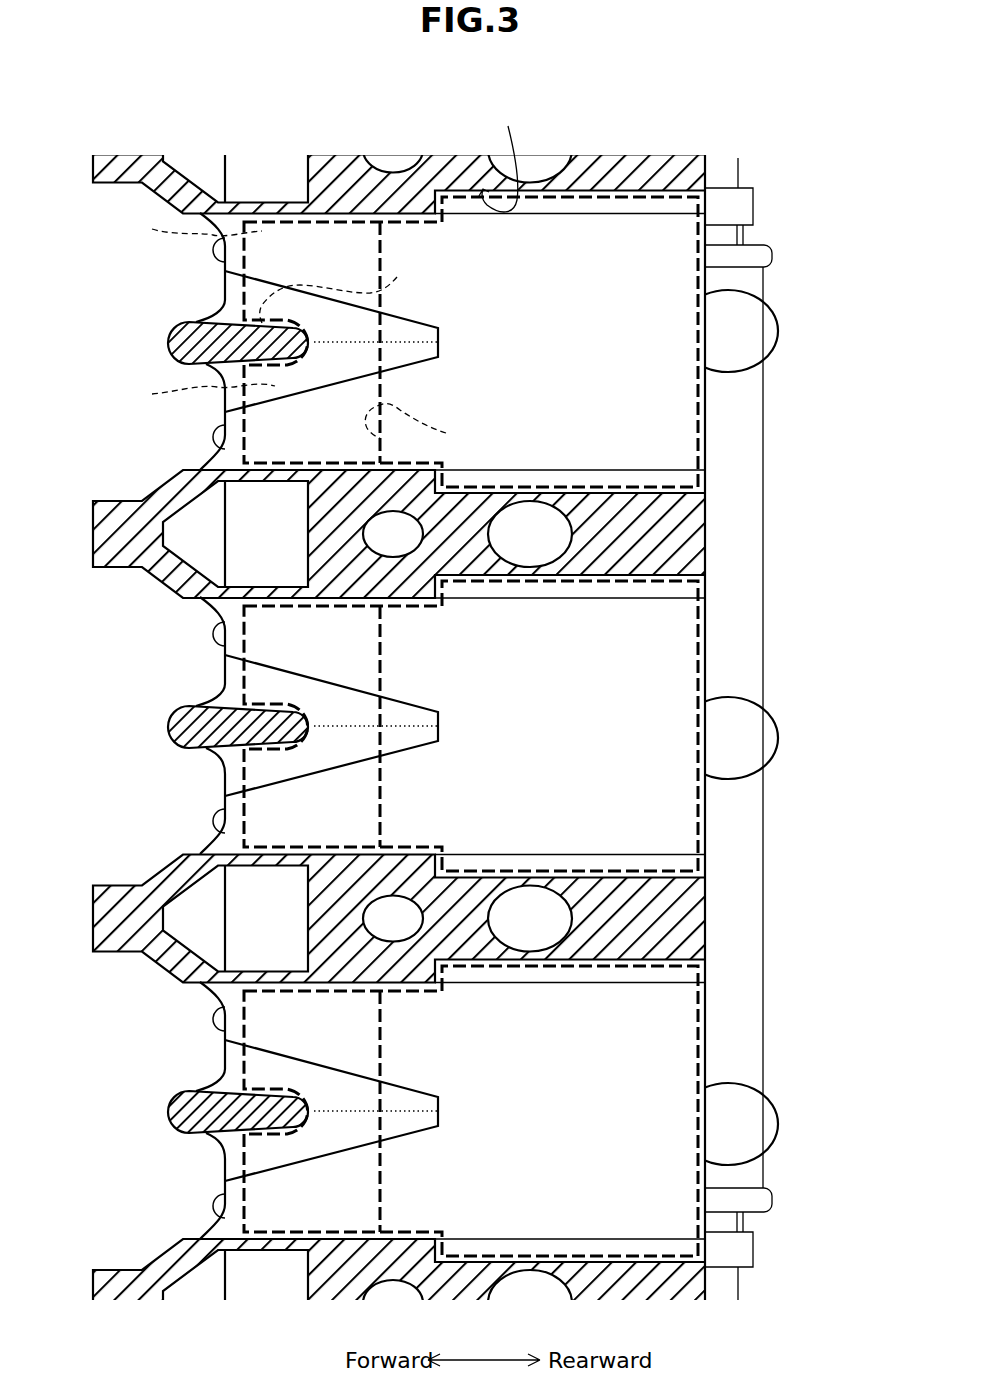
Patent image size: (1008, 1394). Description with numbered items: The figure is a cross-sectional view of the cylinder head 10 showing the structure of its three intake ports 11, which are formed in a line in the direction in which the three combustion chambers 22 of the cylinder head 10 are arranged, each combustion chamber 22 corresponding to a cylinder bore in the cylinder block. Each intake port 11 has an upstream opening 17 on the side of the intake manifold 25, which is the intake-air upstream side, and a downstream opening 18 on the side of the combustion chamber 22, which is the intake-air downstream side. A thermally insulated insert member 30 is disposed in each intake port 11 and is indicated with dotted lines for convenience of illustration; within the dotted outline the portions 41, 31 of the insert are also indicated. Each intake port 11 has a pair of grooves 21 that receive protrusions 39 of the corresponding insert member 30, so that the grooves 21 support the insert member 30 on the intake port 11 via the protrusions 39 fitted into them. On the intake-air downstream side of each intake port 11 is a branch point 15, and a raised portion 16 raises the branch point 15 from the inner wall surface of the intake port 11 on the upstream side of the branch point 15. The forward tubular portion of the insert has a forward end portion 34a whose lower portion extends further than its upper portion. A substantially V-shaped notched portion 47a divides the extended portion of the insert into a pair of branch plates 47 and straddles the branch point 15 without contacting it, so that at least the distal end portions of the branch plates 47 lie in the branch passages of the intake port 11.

The cylinder head 10 is at (695, 538).
The intake port 11 is at (585, 357).
The branch point 15 is at (193, 322).
The raised portion 16 is at (358, 318).
The upstream opening 17 is at (700, 420).
The downstream opening 18 is at (228, 237).
The groove 21 is at (502, 155).
The combustion chamber 22 is at (135, 355).
The intake manifold 25 is at (744, 468).
The thermally insulated insert member 30 is at (436, 93).
The inner frame portion 31 is at (420, 225).
The forward end portion 34a is at (431, 426).
The protrusion 39 is at (613, 203).
The resin frame 41 is at (337, 225).
The branch plate 47 is at (198, 311).
The notched portion 47a is at (353, 287).